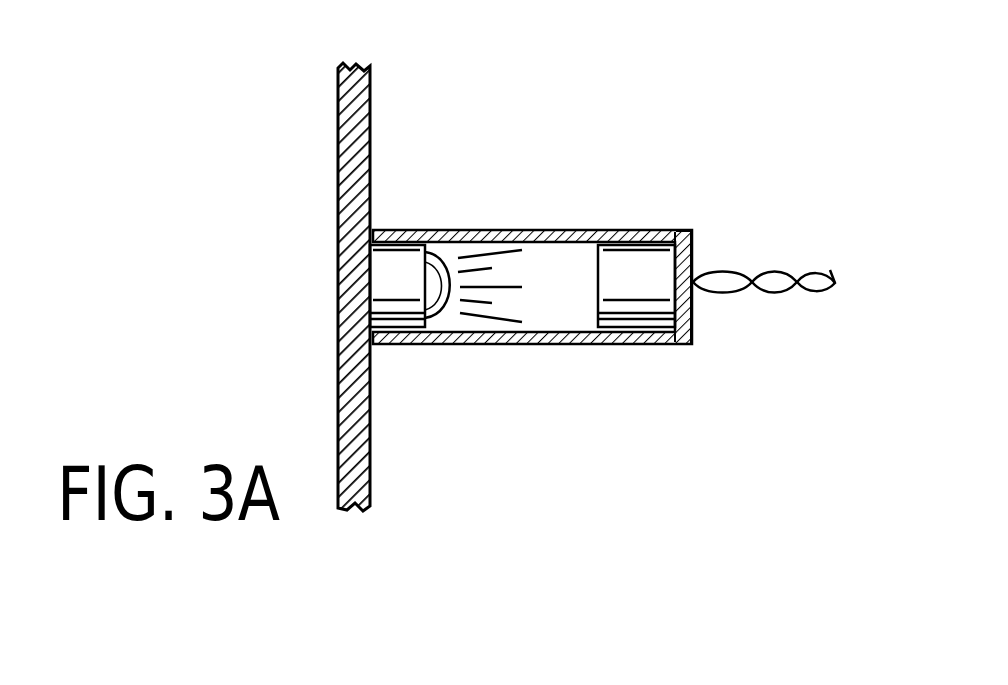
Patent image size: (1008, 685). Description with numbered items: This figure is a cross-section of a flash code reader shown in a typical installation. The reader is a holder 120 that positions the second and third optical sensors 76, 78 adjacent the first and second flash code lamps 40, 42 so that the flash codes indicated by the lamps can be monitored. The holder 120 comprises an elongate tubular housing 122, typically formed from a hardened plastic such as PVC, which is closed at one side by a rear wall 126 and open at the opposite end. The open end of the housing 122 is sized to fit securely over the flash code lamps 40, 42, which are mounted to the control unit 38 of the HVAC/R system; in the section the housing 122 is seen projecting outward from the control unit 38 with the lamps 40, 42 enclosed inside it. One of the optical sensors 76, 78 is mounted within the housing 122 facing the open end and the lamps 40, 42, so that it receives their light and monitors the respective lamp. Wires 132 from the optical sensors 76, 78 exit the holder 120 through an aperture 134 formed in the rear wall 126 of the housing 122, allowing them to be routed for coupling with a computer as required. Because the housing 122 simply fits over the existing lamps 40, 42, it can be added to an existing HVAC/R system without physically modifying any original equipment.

The control unit 38 is at (294, 287).
The holder 120 is at (615, 265).
The elongate tubular housing 122 is at (465, 226).
The rear wall 126 is at (695, 248).
The aperture 134 is at (678, 274).
The wires 132 is at (775, 300).
The first flash code lamp 40 is at (481, 375).
The second flash code lamp 42 is at (442, 320).
The second optical sensor 76 is at (681, 340).
The third optical sensor 78 is at (633, 303).